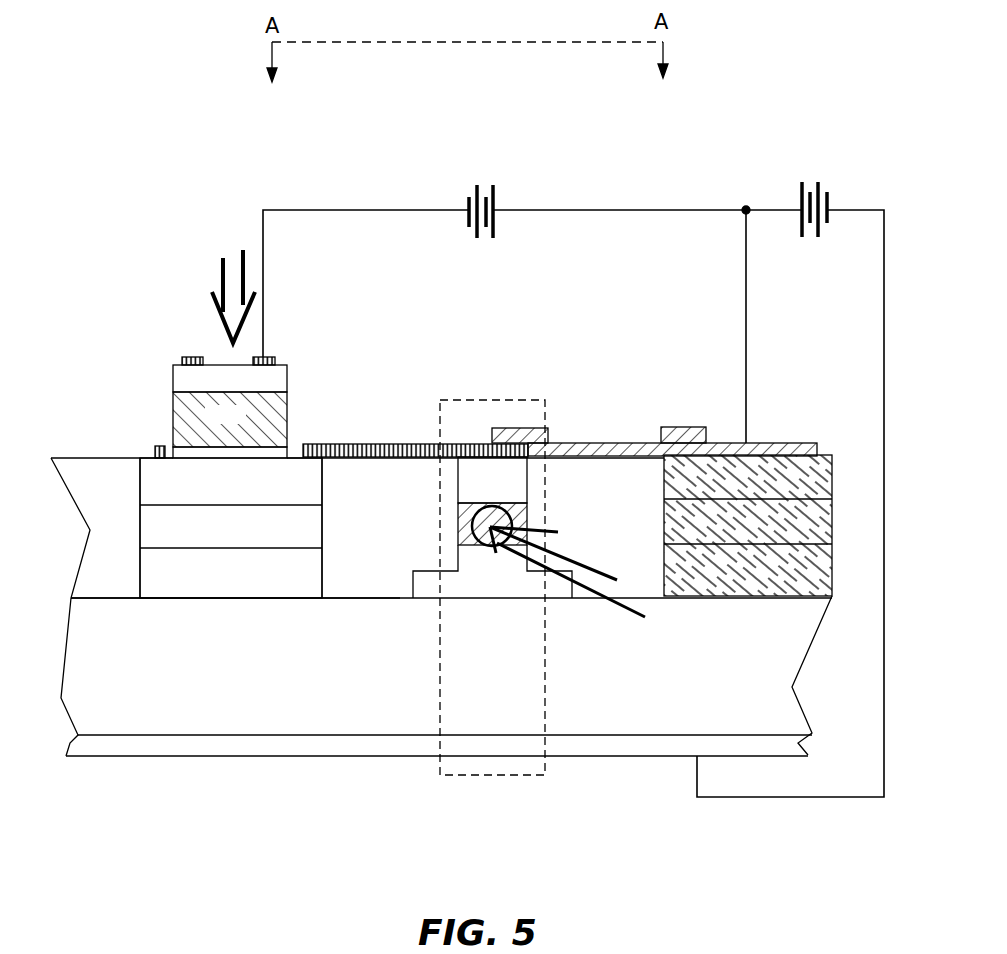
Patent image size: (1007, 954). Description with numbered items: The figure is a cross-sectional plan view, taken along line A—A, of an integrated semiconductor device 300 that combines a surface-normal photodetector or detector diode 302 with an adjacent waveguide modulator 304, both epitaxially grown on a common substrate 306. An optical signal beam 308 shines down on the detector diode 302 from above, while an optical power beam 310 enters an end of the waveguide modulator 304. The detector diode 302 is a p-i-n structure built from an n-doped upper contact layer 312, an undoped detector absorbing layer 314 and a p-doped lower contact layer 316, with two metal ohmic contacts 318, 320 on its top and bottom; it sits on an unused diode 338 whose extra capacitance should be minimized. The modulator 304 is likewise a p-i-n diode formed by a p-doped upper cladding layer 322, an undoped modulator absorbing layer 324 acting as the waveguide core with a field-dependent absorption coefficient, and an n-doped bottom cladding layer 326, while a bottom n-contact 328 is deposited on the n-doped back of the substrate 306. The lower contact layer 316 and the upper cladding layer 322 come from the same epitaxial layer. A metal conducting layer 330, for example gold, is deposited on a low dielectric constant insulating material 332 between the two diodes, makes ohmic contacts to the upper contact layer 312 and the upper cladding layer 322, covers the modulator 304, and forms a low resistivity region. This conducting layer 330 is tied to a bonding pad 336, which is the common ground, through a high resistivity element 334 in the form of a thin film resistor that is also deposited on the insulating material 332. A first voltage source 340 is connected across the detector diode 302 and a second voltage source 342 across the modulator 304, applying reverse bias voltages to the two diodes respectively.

The integrated semiconductor device 300 is at (221, 130).
The surface-normal photodetector or detector diode 302 is at (118, 405).
The modulator 304 is at (465, 400).
The common substrate 306 is at (441, 607).
The optical signal beam 308 is at (222, 273).
The optical power beam 310 is at (618, 608).
The upper contact layer 312 is at (288, 375).
The detector absorbing layer 314 is at (230, 425).
The lower contact layer 316 is at (231, 528).
The metal ohmic contact 318 is at (193, 357).
The metal ohmic contact 320 is at (148, 447).
The upper cladding layer 322 is at (492, 480).
The modulator absorbing layer 324 is at (458, 516).
The bottom cladding layer 326 is at (492, 571).
The bottom n-contact 328 is at (578, 756).
The conducting layer 330 is at (365, 445).
The insulating material 332 is at (357, 527).
The high resistivity element 334 is at (588, 442).
The bonding pad 336 is at (840, 595).
The unused diode 338 is at (195, 612).
The first voltage source 340 is at (480, 183).
The second voltage source 342 is at (817, 183).